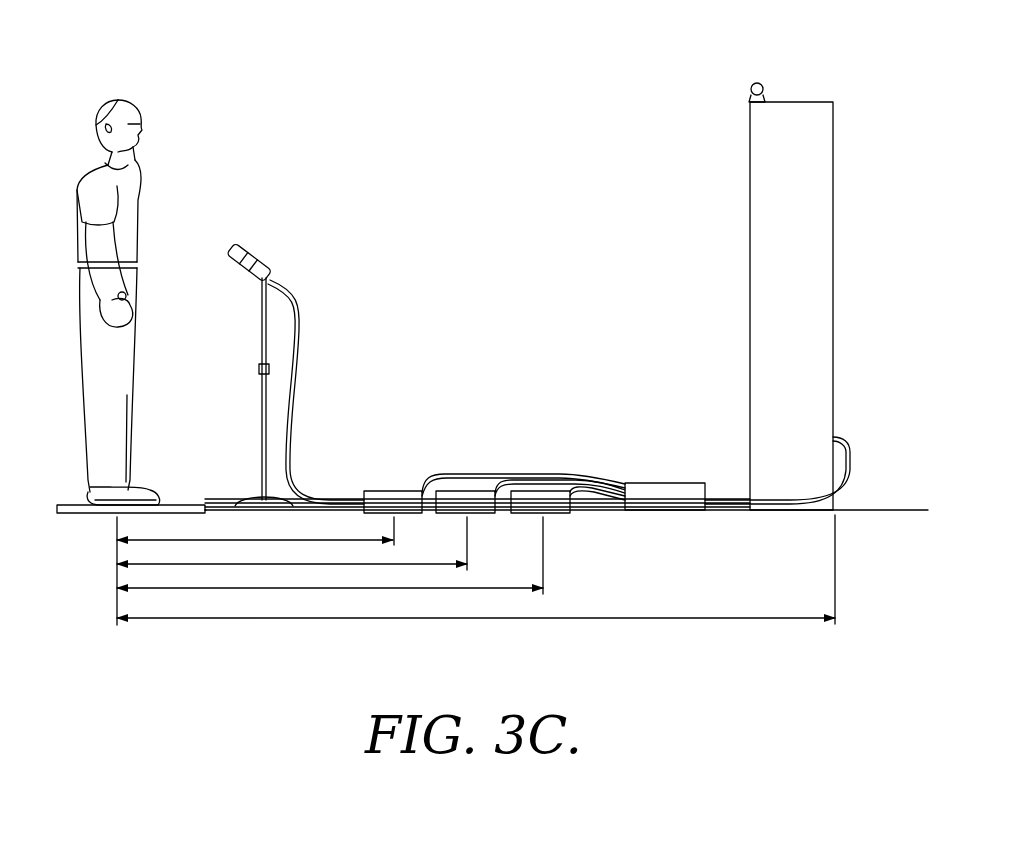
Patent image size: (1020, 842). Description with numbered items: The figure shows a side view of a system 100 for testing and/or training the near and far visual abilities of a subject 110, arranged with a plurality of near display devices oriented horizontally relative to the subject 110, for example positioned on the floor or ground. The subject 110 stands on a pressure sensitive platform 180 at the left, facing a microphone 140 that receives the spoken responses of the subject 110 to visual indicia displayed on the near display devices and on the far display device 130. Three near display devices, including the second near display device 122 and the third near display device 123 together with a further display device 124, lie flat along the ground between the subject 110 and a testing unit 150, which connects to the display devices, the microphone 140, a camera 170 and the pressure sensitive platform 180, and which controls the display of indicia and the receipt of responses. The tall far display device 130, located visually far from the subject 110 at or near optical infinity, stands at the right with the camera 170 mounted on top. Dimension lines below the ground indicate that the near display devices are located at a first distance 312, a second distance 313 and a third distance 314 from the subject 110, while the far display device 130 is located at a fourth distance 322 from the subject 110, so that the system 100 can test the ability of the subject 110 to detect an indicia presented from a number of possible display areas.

The system 100 is at (298, 70).
The subject 110 is at (136, 188).
The second near display device 122 is at (536, 490).
The third near display device 123 is at (462, 490).
The third sensor module 124 is at (390, 490).
The far display device 130 is at (833, 243).
The microphone 140 is at (268, 262).
The testing unit 150 is at (673, 483).
The camera 170 is at (758, 80).
The pressure sensitive platform 180 is at (57, 508).
The first distance 312 is at (229, 541).
The second distance 313 is at (327, 565).
The third distance 314 is at (427, 589).
The fourth distance 322 is at (573, 619).